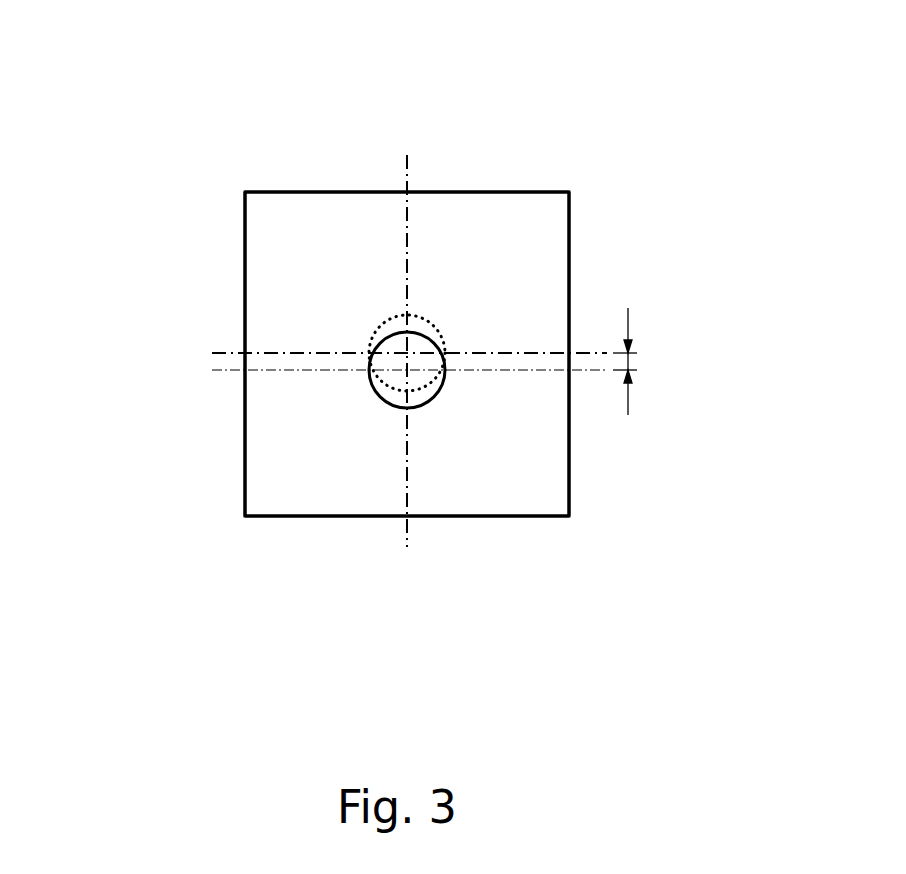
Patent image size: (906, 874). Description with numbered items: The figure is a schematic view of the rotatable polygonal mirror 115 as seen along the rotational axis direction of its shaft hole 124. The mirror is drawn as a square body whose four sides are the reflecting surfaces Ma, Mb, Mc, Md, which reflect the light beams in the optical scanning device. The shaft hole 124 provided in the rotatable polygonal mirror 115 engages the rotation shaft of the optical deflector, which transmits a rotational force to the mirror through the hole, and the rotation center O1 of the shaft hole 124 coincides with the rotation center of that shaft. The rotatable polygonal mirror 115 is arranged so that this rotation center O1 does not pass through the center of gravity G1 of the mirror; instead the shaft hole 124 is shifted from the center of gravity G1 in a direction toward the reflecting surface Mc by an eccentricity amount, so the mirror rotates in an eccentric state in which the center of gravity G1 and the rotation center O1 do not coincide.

The rotatable polygonal mirror 115 is at (327, 226).
The reflecting surface Ma is at (497, 192).
The reflecting surface Mb is at (245, 439).
The reflecting surface Mc is at (296, 516).
The reflecting surface Md is at (570, 247).
The center of gravity G1 is at (407, 352).
The rotation center O1 is at (407, 370).
The shaft hole 124 is at (440, 397).